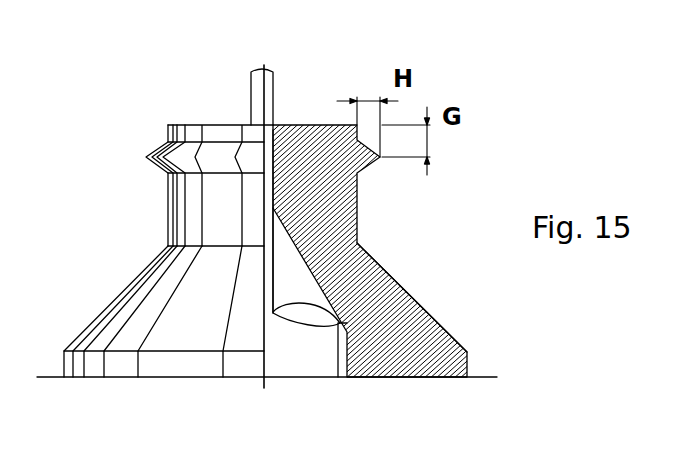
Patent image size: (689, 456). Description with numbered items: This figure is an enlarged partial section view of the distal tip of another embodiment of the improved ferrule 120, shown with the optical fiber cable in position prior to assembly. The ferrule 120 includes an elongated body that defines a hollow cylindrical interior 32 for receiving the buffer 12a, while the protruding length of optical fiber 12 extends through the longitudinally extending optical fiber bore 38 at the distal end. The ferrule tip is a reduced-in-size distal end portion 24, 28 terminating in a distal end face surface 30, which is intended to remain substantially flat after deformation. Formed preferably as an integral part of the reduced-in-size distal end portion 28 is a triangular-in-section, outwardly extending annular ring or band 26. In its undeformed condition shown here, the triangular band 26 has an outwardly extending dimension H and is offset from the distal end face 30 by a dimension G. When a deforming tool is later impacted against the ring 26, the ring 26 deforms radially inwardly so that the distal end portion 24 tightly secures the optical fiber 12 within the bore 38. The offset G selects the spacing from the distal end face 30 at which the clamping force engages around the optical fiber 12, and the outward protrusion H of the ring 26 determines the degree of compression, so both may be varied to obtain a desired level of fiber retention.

The optical fiber 12 is at (273, 100).
The buffer 12a is at (338, 350).
The reduced-in-size distal end portion 24 is at (357, 202).
The annular ring 26 is at (147, 152).
The reduced-in-size distal end portion 28 is at (168, 127).
The distal end face surface 30 is at (217, 125).
The hollow cylindrical interior 32 is at (341, 339).
The optical fiber bore 38 is at (273, 183).
The ferrule 120 is at (412, 285).